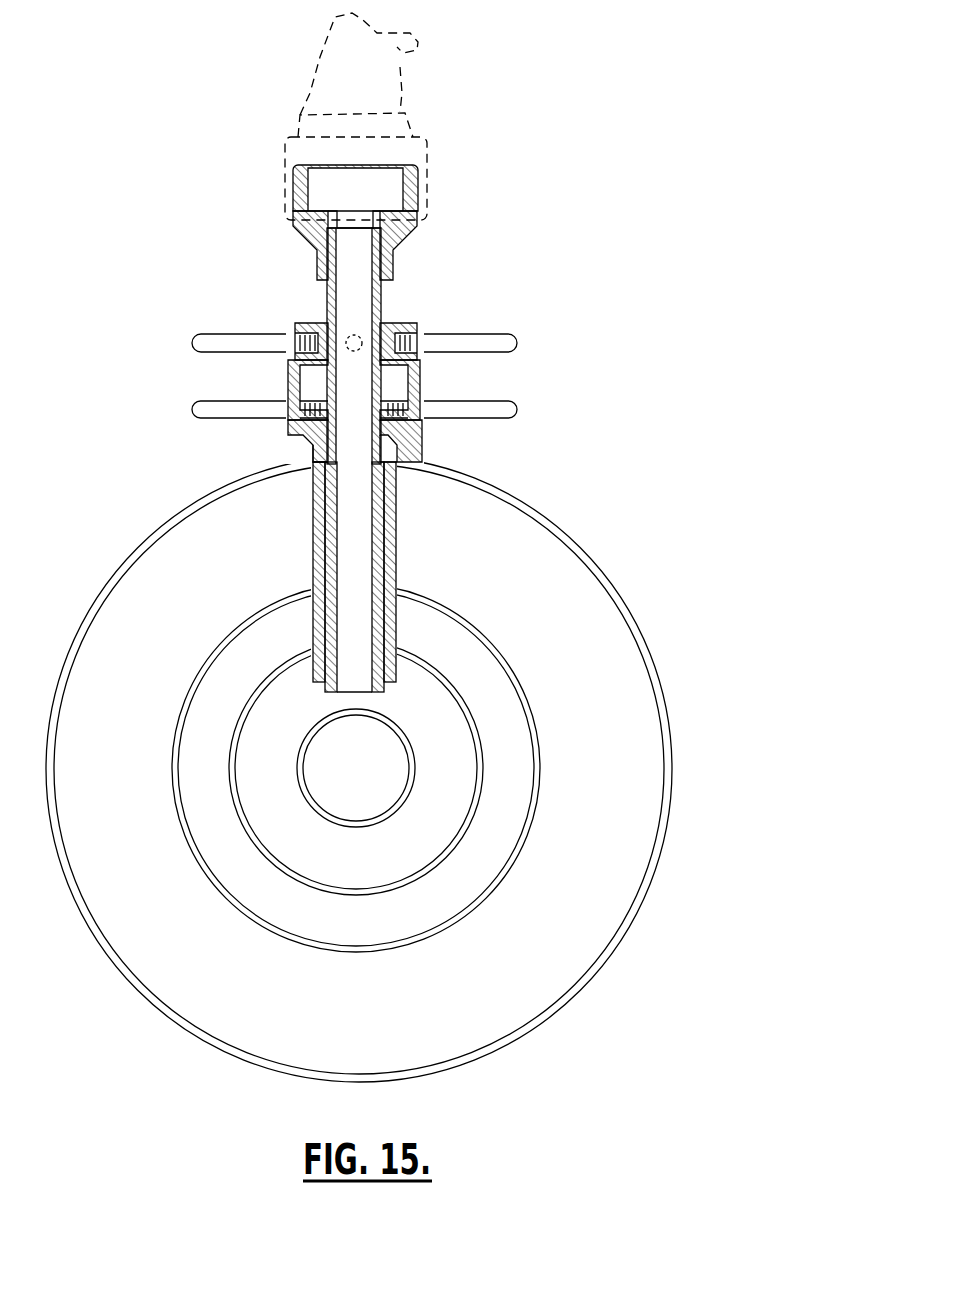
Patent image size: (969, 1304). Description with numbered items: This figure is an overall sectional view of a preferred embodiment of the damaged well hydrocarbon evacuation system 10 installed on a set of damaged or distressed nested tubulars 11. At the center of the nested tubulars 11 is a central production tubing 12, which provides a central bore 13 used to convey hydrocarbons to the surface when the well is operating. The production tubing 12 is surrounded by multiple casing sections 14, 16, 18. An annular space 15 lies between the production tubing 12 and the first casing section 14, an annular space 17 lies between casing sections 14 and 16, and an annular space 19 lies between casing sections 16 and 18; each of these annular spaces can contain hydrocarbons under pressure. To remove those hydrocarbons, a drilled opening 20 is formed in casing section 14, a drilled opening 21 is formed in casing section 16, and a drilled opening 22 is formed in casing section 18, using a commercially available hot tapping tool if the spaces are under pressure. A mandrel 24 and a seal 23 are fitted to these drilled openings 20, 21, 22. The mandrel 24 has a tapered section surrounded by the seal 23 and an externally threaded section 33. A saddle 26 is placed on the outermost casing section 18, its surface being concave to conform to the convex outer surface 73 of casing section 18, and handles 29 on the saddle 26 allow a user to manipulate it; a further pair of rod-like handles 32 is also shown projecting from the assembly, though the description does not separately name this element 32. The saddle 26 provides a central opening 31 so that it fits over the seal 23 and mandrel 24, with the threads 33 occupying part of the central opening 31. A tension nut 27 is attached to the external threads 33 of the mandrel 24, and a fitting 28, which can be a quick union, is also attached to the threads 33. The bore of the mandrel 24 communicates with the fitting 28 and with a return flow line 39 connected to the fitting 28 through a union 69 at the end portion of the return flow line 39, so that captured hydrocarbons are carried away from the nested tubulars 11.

The damaged well hydrocarbon evacuation system 10 is at (567, 273).
The nested tubulars 11 is at (82, 937).
The production tubing 12 is at (357, 828).
The central bore 13 is at (362, 728).
The casing section 14 is at (480, 782).
The annular space 15 is at (285, 708).
The casing section 16 is at (485, 902).
The annular space 17 is at (385, 920).
The casing section 18 is at (247, 1058).
The annular space 19 is at (487, 558).
The drilled opening 20 is at (314, 650).
The drilled opening 21 is at (393, 590).
The drilled opening 22 is at (313, 468).
The seal 23 is at (318, 535).
The mandrel 24 is at (383, 690).
The saddle 26 is at (423, 445).
The tension nut 27 is at (408, 325).
The fitting 28 is at (308, 237).
The handles 29 is at (505, 407).
The central opening 31 is at (310, 385).
The upper rod 32 is at (203, 348).
The threaded section 33 is at (382, 305).
The return flow line 39 is at (405, 90).
The union 69 is at (425, 190).
The convex outer surface 73 is at (232, 475).